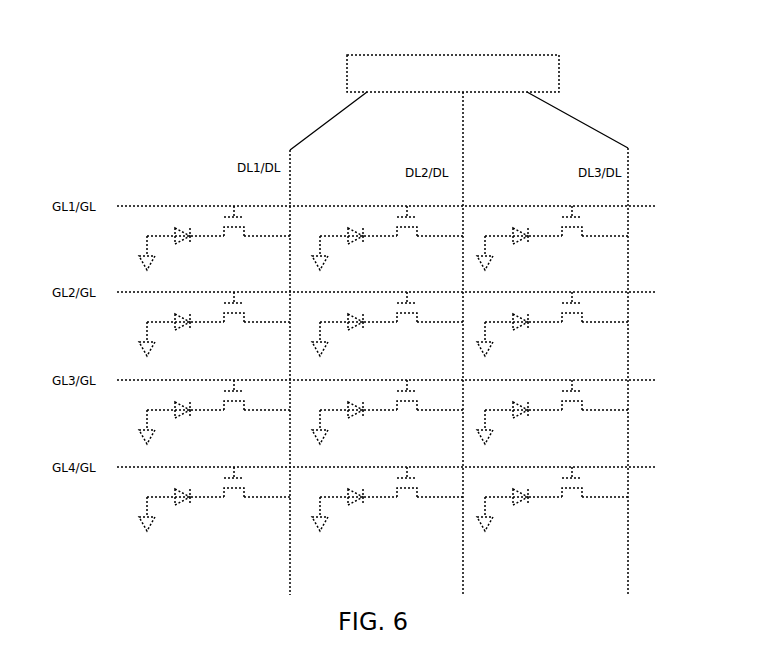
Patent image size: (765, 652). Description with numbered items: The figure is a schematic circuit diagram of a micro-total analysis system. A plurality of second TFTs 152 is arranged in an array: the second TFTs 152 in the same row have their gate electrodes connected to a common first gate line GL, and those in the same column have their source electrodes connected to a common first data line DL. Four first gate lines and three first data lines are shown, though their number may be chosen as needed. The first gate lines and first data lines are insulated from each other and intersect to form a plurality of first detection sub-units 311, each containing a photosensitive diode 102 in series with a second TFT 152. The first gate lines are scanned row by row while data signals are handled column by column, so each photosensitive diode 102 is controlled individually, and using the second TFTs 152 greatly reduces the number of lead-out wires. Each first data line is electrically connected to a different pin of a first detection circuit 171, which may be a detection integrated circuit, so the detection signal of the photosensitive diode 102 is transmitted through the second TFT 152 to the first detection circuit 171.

The first detection circuit 171 is at (550, 73).
The first detection sub-unit 311 is at (610, 260).
The photosensitive diode 102 is at (186, 244).
The second TFT 152 is at (236, 232).